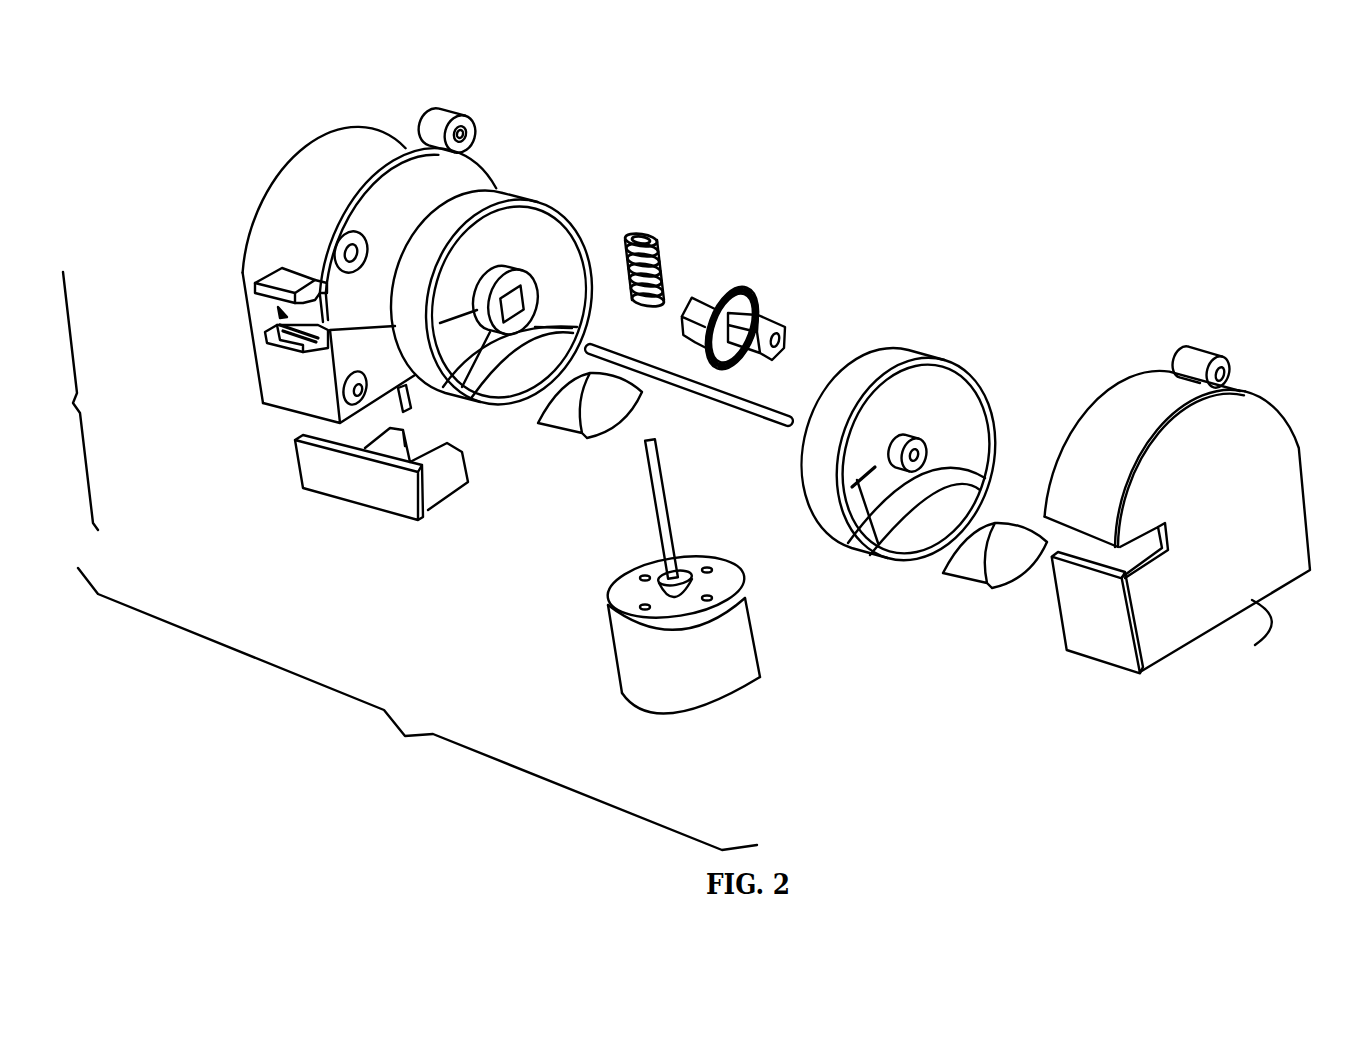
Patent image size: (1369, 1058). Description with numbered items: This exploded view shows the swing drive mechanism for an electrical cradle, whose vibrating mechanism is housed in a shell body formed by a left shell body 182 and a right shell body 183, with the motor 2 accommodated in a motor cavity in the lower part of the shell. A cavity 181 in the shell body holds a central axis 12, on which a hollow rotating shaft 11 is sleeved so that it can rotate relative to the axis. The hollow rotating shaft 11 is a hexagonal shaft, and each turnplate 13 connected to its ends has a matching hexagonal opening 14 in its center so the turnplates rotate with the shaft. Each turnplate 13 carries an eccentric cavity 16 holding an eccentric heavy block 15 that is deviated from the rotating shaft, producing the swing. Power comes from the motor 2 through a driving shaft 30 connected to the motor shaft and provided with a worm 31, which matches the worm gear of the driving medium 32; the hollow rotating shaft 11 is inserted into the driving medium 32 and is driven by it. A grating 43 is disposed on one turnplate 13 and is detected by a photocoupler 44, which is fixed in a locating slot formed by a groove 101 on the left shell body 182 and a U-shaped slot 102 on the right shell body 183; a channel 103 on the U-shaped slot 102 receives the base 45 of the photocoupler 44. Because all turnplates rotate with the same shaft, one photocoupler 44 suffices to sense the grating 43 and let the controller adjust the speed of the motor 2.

The motor 2 is at (712, 655).
The hollow rotating shaft 11 is at (756, 398).
The central axis 12 is at (753, 405).
The turnplate 13 is at (882, 360).
The hexagonal opening 14 is at (513, 303).
The eccentric heavy block 15 is at (598, 422).
The eccentric cavity 16 is at (903, 537).
The driving shaft 30 is at (653, 513).
The worm 31 is at (640, 232).
The driving medium 32 is at (733, 290).
The grating 43 is at (870, 545).
The photocoupler 44 is at (445, 477).
The base 45 is at (347, 477).
The groove 101 is at (1110, 560).
The U-shaped slot 102 is at (275, 312).
The channel 103 is at (322, 348).
The cavity 181 is at (352, 252).
The left shell body 182 is at (1210, 540).
The right shell body 183 is at (290, 200).